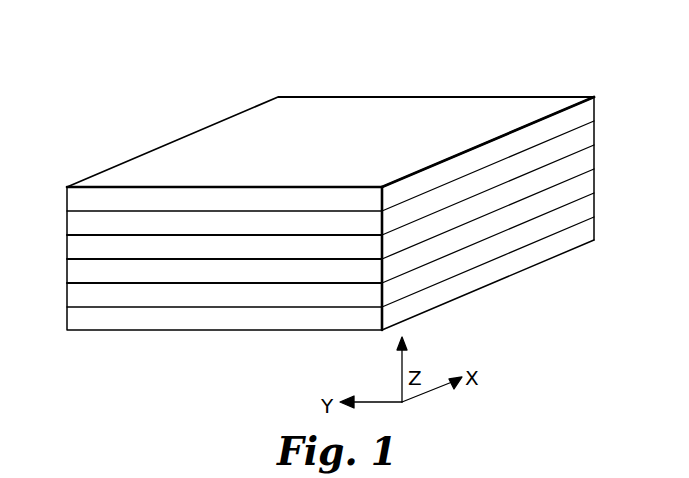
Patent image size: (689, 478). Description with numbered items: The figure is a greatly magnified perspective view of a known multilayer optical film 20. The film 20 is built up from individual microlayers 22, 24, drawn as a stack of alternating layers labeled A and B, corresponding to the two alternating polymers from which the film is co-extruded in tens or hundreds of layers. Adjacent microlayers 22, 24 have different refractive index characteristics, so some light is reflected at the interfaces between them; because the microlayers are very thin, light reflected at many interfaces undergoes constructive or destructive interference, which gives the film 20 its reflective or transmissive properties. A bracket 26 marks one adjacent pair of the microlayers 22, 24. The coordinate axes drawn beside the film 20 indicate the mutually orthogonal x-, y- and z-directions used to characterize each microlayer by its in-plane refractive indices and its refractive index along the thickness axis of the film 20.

The multilayer optical film 20 is at (501, 66).
The microlayer 22 is at (97, 241).
The microlayer 24 is at (90, 272).
The layer pair 26 is at (59, 235).